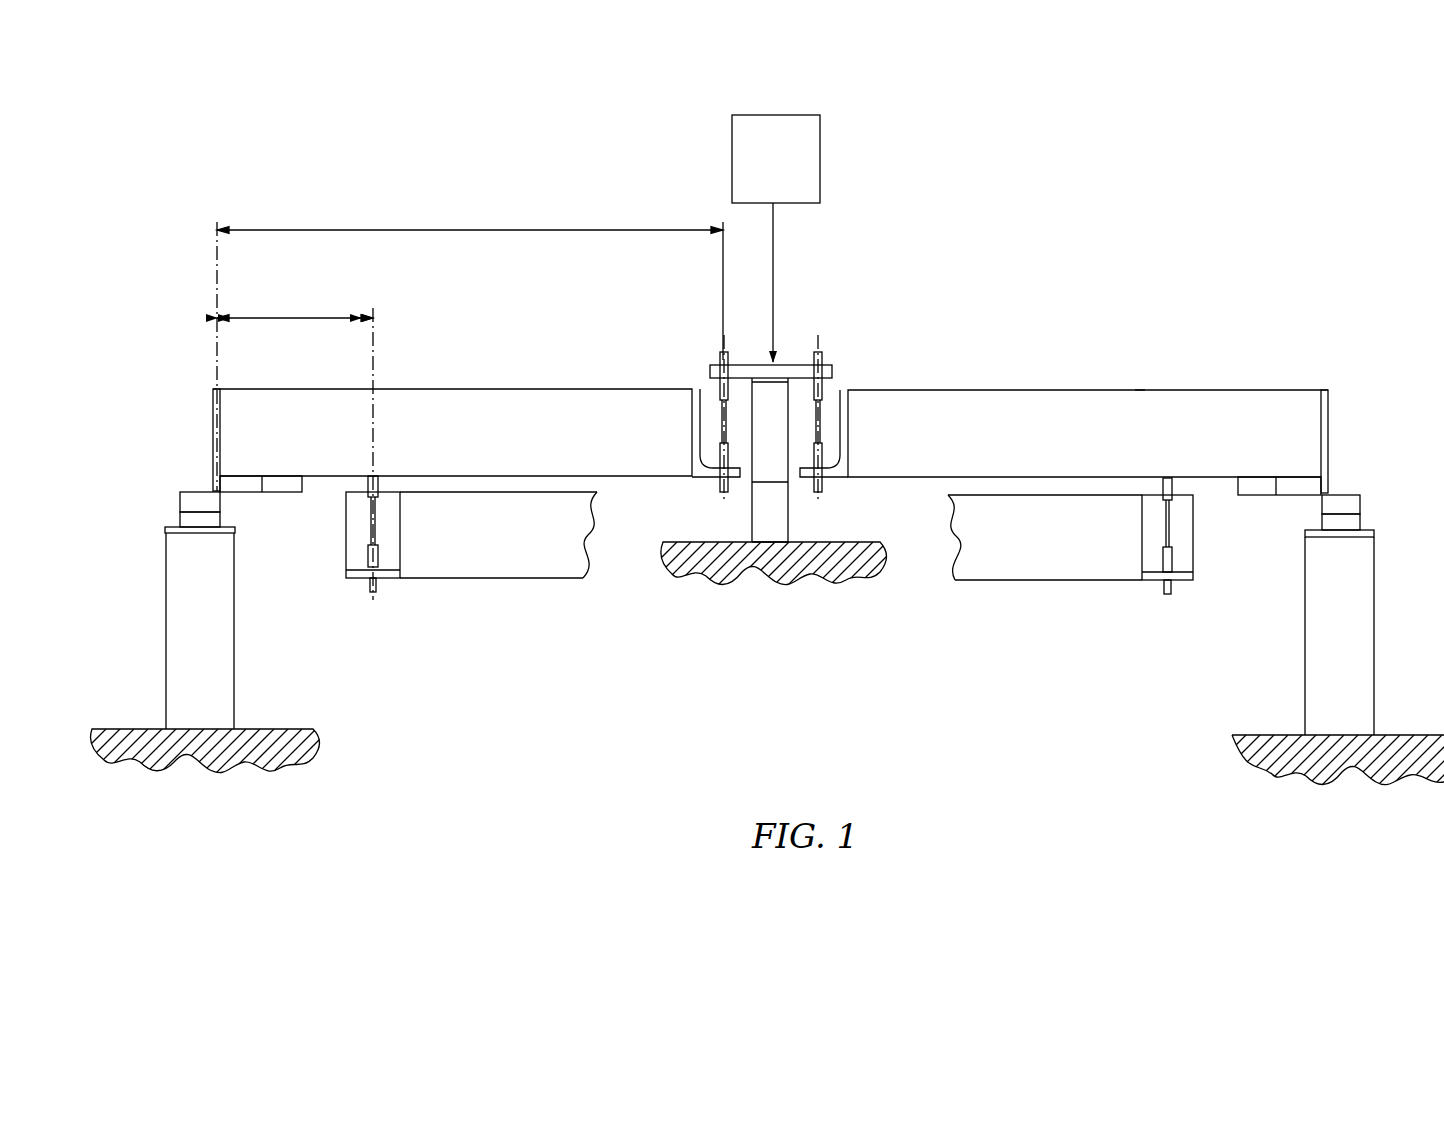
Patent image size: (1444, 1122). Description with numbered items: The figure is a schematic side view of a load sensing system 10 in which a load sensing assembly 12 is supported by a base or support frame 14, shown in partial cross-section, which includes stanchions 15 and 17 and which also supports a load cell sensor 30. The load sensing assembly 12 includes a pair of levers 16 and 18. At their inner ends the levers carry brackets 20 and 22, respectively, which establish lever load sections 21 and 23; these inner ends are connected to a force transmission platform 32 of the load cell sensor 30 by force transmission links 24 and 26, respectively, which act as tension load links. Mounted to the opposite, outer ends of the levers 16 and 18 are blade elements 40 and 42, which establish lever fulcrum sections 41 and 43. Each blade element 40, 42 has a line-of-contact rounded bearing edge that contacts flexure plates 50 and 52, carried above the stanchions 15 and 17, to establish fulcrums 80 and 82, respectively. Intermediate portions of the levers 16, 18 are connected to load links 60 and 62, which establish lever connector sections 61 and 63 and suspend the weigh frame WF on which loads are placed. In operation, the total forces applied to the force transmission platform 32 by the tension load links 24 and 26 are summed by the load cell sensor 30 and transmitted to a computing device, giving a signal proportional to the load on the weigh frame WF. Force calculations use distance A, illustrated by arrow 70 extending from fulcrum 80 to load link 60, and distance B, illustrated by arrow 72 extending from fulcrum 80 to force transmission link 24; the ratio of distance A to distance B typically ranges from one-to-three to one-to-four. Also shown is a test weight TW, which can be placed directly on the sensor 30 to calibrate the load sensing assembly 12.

The load sensing system 10 is at (363, 162).
The load sensing assembly 12 is at (268, 192).
The base or support frame 14 is at (195, 778).
The stanchion 15 is at (160, 640).
The lever 16 is at (456, 432).
The stanchion 17 is at (1303, 640).
The lever 18 is at (1084, 433).
The bracket 20 is at (706, 478).
The lever load section 21 is at (650, 540).
The bracket 22 is at (832, 480).
The lever load section 23 is at (878, 540).
The force transmission link 24 is at (718, 410).
The force transmission link 26 is at (822, 410).
The load cell sensor 30 is at (858, 262).
The force transmission platform 32 is at (790, 360).
The blade element 40 is at (213, 440).
The lever fulcrum section 41 is at (185, 388).
The blade element 42 is at (1330, 443).
The lever fulcrum section 43 is at (1345, 392).
The flexure plate 50 is at (246, 500).
The flexure plate 52 is at (1290, 500).
The load link 60 is at (377, 537).
The lever connector section 61 is at (378, 382).
The load link 62 is at (1162, 537).
The lever connector section 63 is at (1140, 389).
The arrow 70 is at (312, 297).
The arrow 72 is at (500, 218).
The fulcrum 80 is at (207, 492).
The fulcrum 82 is at (1340, 491).
The test weight TW is at (826, 158).
The weigh frame WF is at (502, 583).